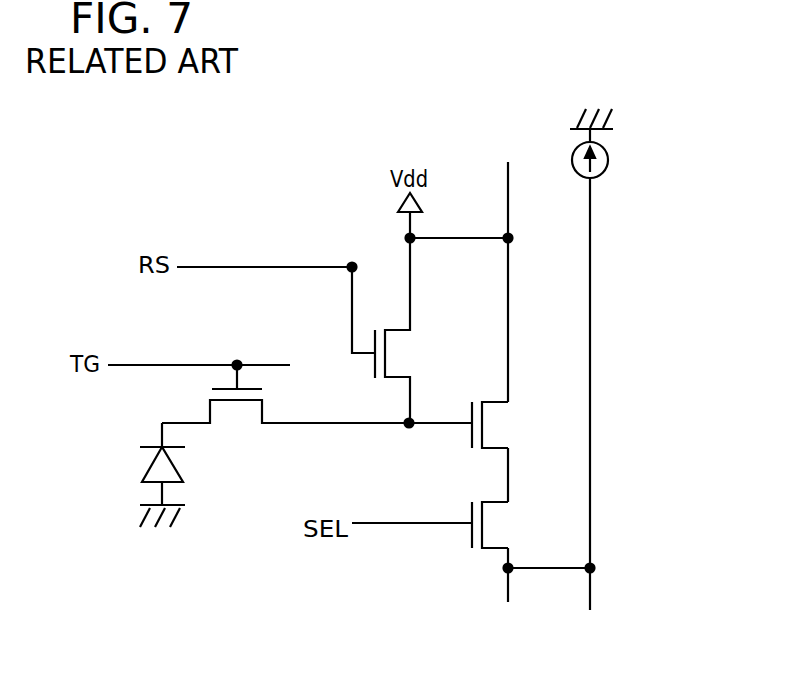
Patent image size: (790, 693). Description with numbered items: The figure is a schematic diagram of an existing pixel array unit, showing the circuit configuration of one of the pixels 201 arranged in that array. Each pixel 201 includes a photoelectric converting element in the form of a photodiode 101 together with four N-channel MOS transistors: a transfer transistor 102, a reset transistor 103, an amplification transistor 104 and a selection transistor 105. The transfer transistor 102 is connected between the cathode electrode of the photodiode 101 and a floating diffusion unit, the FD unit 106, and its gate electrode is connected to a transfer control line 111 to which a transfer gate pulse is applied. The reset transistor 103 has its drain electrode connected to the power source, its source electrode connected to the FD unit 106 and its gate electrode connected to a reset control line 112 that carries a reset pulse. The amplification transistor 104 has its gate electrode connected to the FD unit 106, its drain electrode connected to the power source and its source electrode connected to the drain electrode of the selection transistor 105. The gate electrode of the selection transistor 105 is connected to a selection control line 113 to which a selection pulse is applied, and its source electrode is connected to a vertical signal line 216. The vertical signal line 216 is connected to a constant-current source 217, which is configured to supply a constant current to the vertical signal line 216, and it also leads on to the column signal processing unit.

The pixel 201 is at (155, 145).
The photodiode 101 is at (152, 461).
The transfer transistor 102 is at (236, 408).
The reset transistor 103 is at (395, 353).
The amplification transistor 104 is at (497, 424).
The selection transistor 105 is at (497, 523).
The FD unit 106 is at (409, 431).
The transfer control line 111 is at (155, 362).
The reset control line 112 is at (219, 263).
The selection control line 113 is at (407, 531).
The vertical signal line 216 is at (592, 349).
The constant-current source 217 is at (610, 160).